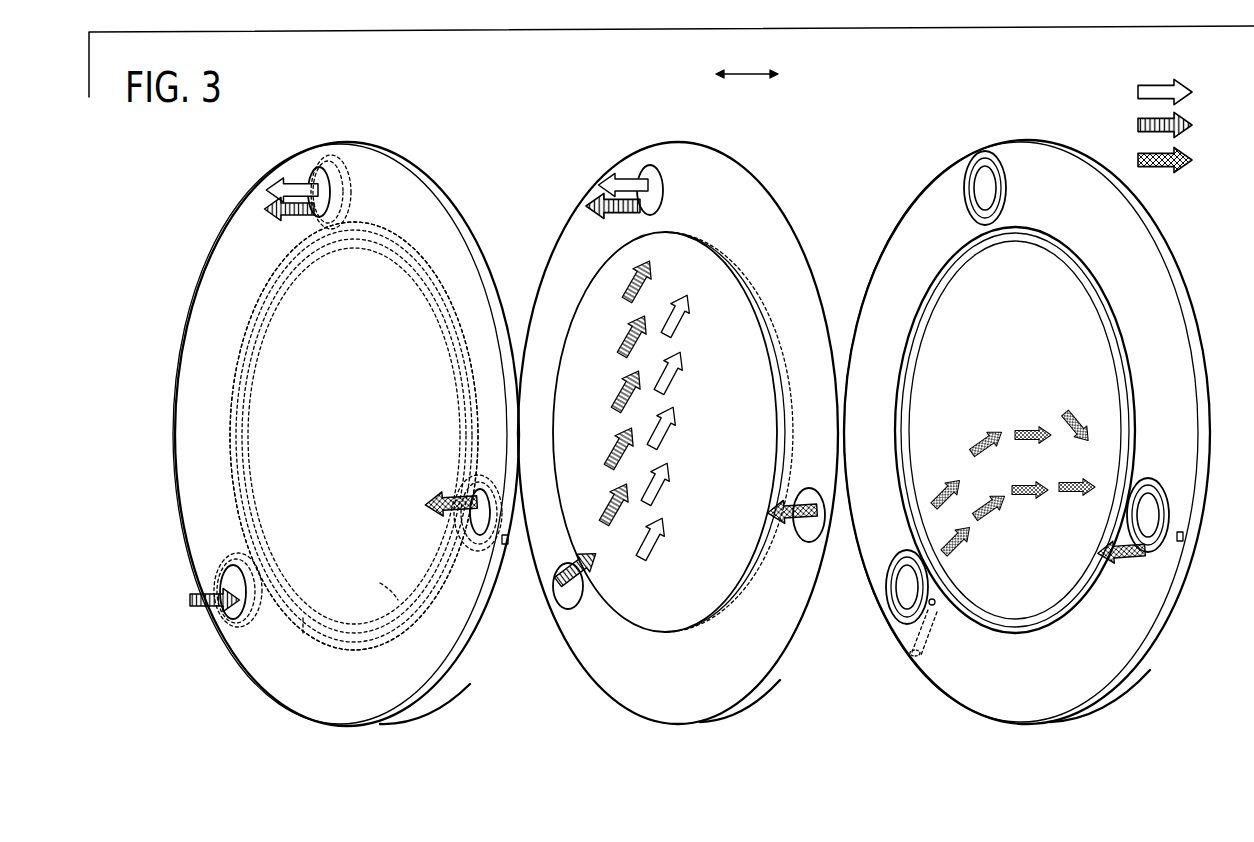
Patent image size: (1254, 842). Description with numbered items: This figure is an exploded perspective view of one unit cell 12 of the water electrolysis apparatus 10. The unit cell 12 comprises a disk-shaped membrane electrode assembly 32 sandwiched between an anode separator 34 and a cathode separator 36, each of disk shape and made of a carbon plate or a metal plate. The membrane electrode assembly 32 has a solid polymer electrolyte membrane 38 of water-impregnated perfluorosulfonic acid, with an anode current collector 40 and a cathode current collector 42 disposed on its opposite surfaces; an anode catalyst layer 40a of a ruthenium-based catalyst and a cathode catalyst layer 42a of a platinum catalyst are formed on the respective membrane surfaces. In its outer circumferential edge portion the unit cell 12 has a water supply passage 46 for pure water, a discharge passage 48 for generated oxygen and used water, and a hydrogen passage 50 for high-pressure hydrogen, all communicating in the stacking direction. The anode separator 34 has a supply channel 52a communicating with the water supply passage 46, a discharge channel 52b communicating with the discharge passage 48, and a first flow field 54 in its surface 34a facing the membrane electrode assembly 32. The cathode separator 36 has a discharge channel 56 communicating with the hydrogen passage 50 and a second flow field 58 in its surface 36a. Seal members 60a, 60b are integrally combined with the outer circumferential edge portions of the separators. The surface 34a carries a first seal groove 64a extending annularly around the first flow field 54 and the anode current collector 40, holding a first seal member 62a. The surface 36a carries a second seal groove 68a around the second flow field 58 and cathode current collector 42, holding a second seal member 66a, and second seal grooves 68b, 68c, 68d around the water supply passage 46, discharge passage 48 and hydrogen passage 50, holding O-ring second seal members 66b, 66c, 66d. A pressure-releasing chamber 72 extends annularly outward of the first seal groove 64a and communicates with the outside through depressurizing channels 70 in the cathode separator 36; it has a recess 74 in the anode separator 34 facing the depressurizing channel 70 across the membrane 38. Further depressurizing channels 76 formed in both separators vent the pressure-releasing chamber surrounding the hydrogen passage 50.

The unit cell 12 is at (150, 151).
The fuel cell stack 10 is at (190, 151).
The membrane electrode assembly 32 is at (727, 153).
The anode separator 34 is at (440, 186).
The surface of the anode separator 34a is at (193, 403).
The cathode separator 36 is at (1070, 145).
The surface of the cathode separator 36a is at (902, 253).
The solid polymer electrolyte membrane 38 is at (728, 690).
The anode current collector 40 is at (665, 471).
The anode catalyst layer 40a is at (650, 618).
The cathode current collector 42 is at (697, 267).
The cathode catalyst layer 42a is at (725, 412).
The water supply passage 46 is at (237, 583).
The discharge passage 48 is at (318, 176).
The hydrogen passage 50 is at (480, 517).
The supply channel 52a is at (302, 643).
The discharge channel 52b is at (313, 228).
The first flow field 54 is at (398, 600).
The discharge channel 56 is at (1140, 503).
The second flow field 58 is at (1050, 290).
The seal member 60a is at (405, 692).
The seal member 60b is at (1130, 630).
The first seal member 62a is at (354, 436).
The first seal groove 64a is at (250, 438).
The second seal member 66a is at (1103, 313).
The second seal member 66b is at (878, 603).
The second seal member 66c is at (945, 173).
The second seal member 66d is at (1152, 552).
The second seal groove 68a is at (1103, 293).
The second seal groove 68b is at (890, 630).
The second seal groove 68c is at (975, 163).
The second seal groove 68d is at (1170, 557).
The depressurizing channel 70 is at (927, 647).
The pressure-releasing chamber 72 is at (940, 597).
The recess 74 is at (232, 468).
The depressurizing channel 76 is at (510, 540).